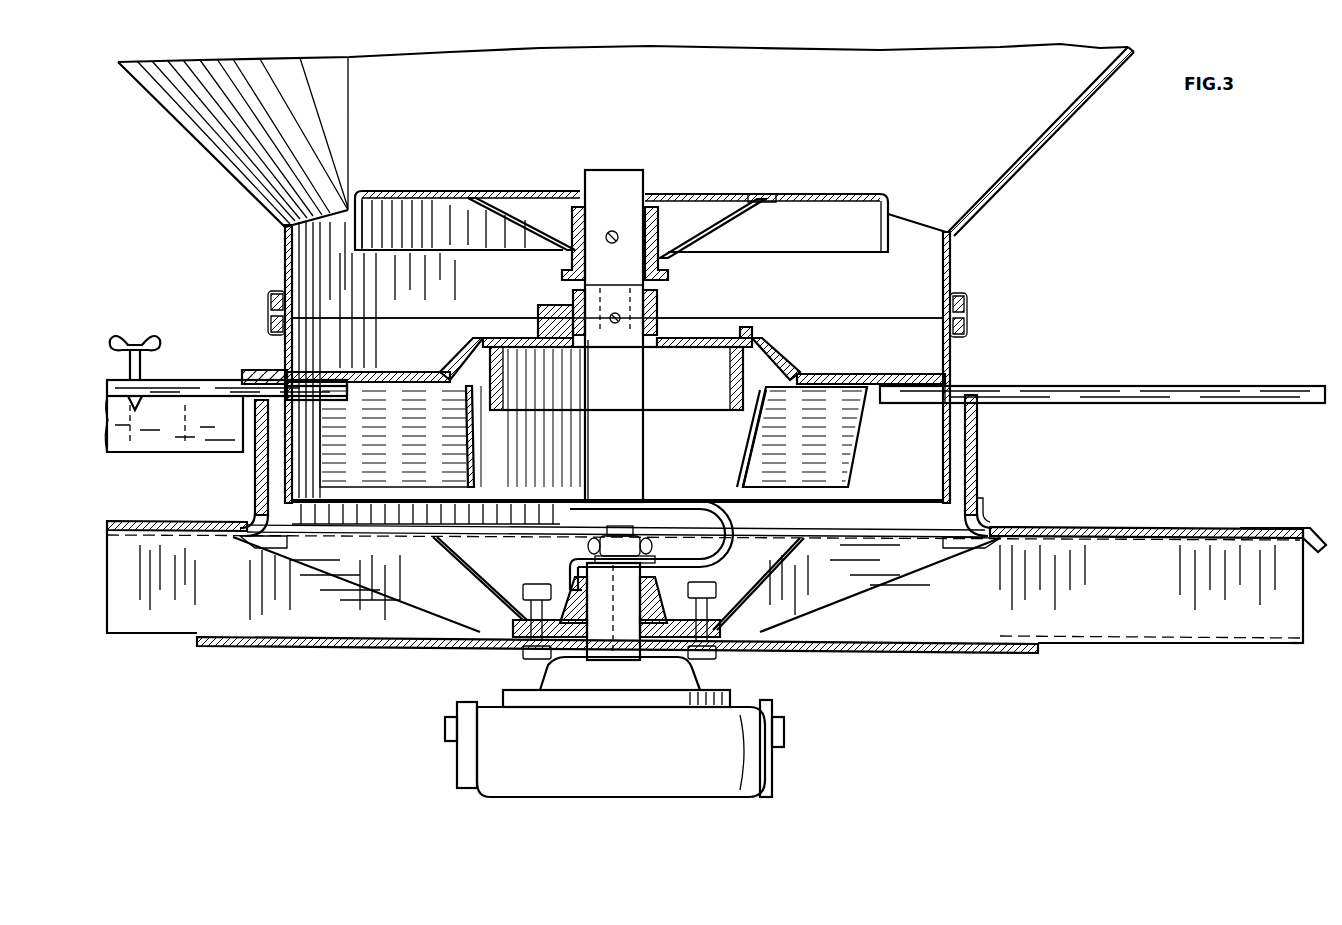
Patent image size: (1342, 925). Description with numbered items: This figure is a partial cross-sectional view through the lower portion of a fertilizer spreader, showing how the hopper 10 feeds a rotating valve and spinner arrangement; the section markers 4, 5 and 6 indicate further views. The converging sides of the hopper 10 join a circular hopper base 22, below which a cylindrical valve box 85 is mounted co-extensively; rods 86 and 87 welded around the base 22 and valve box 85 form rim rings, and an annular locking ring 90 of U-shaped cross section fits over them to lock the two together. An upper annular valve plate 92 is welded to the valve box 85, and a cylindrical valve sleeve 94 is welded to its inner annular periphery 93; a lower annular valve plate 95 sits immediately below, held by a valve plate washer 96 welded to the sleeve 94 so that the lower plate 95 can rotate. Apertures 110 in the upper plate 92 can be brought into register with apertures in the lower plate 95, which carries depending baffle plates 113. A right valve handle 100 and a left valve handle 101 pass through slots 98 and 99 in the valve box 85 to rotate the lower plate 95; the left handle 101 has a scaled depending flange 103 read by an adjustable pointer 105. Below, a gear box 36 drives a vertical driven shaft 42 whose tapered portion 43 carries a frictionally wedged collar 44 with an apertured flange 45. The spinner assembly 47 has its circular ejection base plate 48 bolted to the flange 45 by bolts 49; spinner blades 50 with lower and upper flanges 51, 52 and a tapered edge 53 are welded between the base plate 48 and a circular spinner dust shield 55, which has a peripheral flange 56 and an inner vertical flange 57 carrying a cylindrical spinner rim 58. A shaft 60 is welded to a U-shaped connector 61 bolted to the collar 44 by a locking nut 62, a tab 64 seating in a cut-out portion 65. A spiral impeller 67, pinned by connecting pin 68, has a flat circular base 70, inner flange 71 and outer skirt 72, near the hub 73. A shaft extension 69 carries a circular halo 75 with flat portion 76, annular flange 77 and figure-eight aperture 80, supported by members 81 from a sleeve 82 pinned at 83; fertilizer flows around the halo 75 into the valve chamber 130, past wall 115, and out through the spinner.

The section line 4- 4 is at (172, 170).
The section line 5- 5 is at (113, 331).
The section line 6- 6 is at (107, 552).
The hopper 10 is at (1068, 113).
The circular hopper base 22 is at (950, 236).
The gear box 36 is at (695, 747).
The driven shaft 42 is at (614, 651).
The tapered portion 43 is at (618, 609).
The collar 44 is at (665, 596).
The apertured flange 45 is at (716, 600).
The spinner or impeller assembly 47 is at (1100, 520).
The circular ejection base plate 48 is at (925, 652).
The bolts 49 is at (702, 658).
The spinner or impeller blades 50 is at (1286, 627).
The lower flange 51 is at (278, 633).
The upper flange 52 is at (188, 546).
The tapered edge 53 is at (958, 570).
The circular spinner dust shield 55 is at (1244, 527).
The peripheral flange 56 is at (1316, 538).
The inner vertical flange 57 is at (986, 502).
The cylindrical spinner rim 58 is at (978, 440).
The shaft 60 is at (626, 419).
The U-shaped connector 61 is at (722, 508).
The locking nut 62 is at (592, 548).
The tab 64 is at (568, 580).
The cut-out portion 65 is at (570, 590).
The spiral impeller 67 is at (722, 330).
The connecting pin 68 is at (613, 325).
The shaft extension 69 is at (640, 170).
The flat circular base 70 is at (506, 330).
The inner flange 71 is at (657, 300).
The outer skirt 72 is at (470, 340).
The hub 73 is at (552, 306).
The circular baffle or halo 75 is at (400, 191).
The flat portion 76 is at (805, 194).
The annular flange 77 is at (890, 228).
The aperture 80 is at (750, 194).
The support members 81 is at (520, 224).
The sleeve 82 is at (658, 215).
The pin 83 is at (609, 233).
The cylindrical valve box 85 is at (952, 366).
The rod 86 is at (278, 294).
The rod 87 is at (271, 322).
The annular locking ring 90 is at (966, 297).
The upper annular valve plate 92 is at (916, 380).
The inner annular periphery 93 is at (505, 378).
The cylindrical valve sleeve 94 is at (728, 375).
The lower annular valve plate 95 is at (868, 380).
The valve plate washer 96 is at (466, 392).
The slot 98 is at (940, 404).
The slot 99 is at (292, 392).
The right valve handle 100 is at (1134, 384).
The left valve handle 101 is at (232, 380).
The depending flange 103 is at (232, 420).
The pointer 105 is at (133, 398).
The apertures 110 is at (335, 380).
The baffle plates 113 is at (838, 455).
The chute wall 115 is at (745, 448).
The valve chamber 130 is at (473, 271).